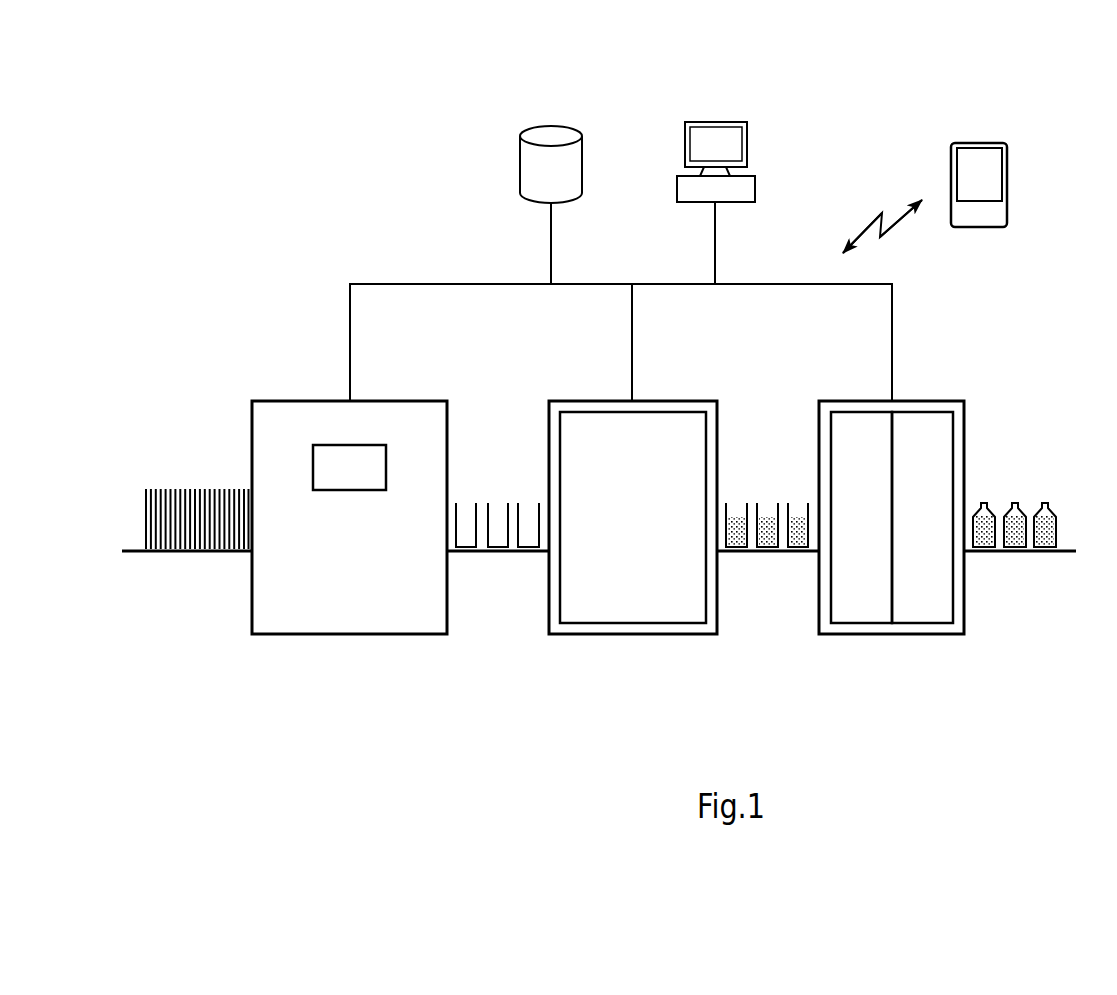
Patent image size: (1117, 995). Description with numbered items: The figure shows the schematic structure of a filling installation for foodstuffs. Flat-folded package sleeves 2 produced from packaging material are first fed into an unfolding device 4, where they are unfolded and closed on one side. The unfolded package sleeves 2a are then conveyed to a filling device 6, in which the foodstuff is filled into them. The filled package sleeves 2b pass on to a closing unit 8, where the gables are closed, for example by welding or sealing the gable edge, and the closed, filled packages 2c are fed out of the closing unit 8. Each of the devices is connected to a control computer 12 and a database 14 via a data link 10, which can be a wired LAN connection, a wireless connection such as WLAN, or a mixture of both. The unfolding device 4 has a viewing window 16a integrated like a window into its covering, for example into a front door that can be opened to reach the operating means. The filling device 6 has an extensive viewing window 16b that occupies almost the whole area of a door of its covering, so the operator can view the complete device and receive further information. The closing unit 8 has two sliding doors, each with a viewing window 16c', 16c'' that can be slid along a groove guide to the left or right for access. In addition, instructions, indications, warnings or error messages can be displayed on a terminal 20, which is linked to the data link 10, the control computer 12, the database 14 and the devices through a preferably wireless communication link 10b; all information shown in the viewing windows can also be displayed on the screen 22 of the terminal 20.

The package sleeves 2 is at (193, 568).
The unfolded package sleeves 2a is at (499, 568).
The filled package sleeves 2b is at (769, 568).
The closed, filled packages 2c is at (1024, 568).
The unfolding device 4 is at (347, 652).
The filling device 6 is at (630, 652).
The closing unit 8 is at (890, 652).
The data link 10 is at (429, 284).
The wireless communication link 10b is at (873, 227).
The control computer 12 is at (704, 133).
The database 14 is at (537, 132).
The viewing window 16a is at (330, 457).
The viewing window 16b is at (597, 443).
The viewing window 16c' is at (853, 480).
The viewing window 16c'' is at (937, 480).
The terminal 20 is at (1022, 168).
The screen 22 is at (988, 160).